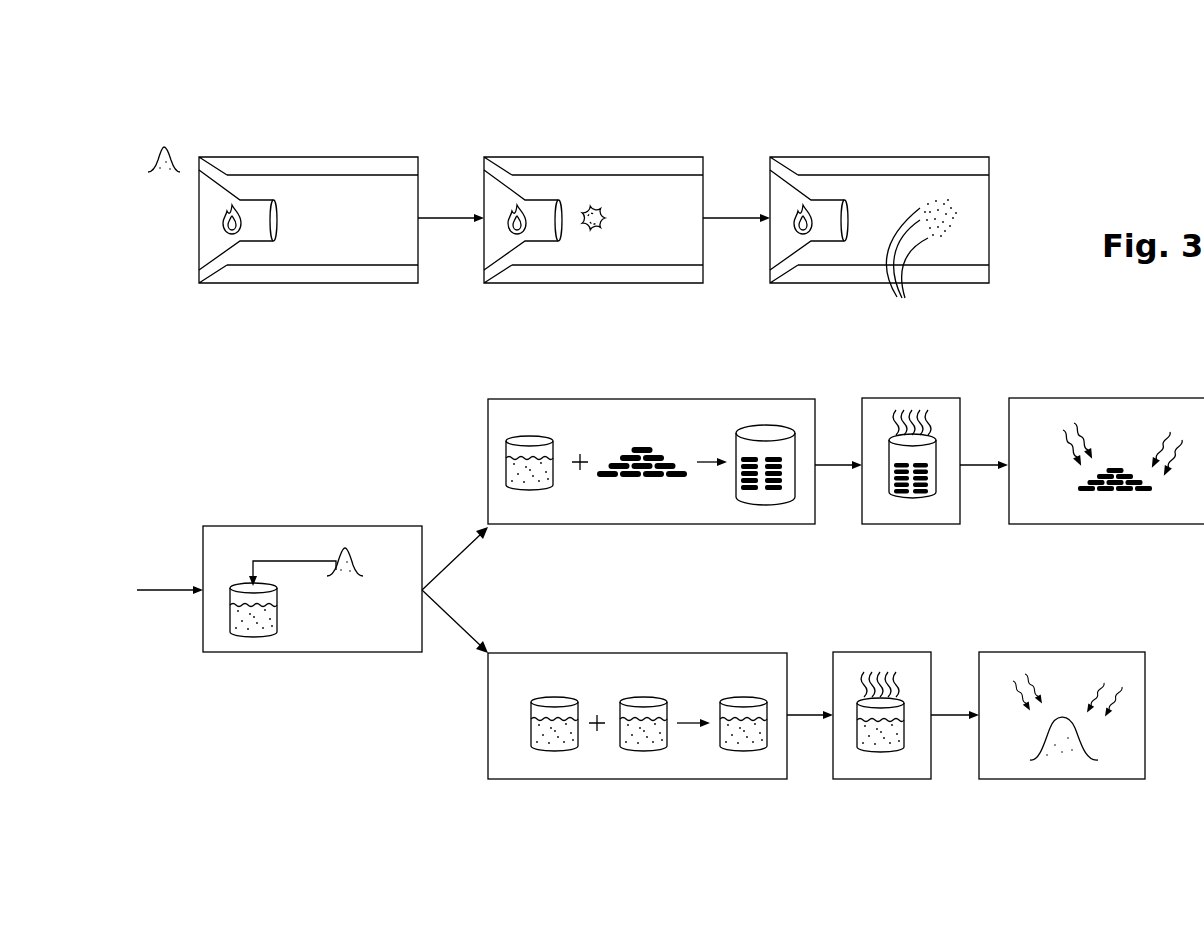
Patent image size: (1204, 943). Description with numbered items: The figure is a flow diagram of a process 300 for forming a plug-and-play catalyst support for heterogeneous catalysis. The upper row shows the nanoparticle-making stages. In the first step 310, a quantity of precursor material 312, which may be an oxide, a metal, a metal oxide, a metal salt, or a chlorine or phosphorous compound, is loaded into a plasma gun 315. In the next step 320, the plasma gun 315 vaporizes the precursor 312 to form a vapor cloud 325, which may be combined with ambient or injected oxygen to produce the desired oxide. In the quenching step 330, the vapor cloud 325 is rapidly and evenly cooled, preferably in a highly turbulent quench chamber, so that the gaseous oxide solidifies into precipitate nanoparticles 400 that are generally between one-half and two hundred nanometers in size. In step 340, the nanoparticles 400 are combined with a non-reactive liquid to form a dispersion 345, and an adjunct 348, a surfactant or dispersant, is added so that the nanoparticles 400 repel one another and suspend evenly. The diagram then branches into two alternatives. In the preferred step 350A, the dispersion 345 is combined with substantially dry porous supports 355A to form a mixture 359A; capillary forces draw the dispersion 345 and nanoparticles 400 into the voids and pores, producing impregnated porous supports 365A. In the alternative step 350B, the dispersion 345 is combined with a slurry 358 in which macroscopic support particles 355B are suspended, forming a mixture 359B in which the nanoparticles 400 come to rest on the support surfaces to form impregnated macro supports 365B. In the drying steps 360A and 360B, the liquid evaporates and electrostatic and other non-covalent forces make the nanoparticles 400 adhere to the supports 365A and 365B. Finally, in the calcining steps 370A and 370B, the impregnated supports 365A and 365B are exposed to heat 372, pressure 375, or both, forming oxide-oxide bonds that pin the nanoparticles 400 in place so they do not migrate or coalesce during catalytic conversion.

The process 300 is at (1060, 105).
The loading step 310 is at (388, 157).
The precursor material 312 is at (210, 204).
The plasma gun 315 is at (253, 198).
The vaporizing step 320 is at (673, 157).
The vapor cloud 325 is at (605, 230).
The quenching step 330 is at (958, 157).
The dispersion forming step 340 is at (392, 526).
The dispersion 345 is at (277, 612).
The adjunct 348 is at (343, 548).
The porous support impregnation step 350A is at (679, 399).
The macroscopic support impregnation step 350B is at (678, 652).
The porous supports 355A is at (642, 440).
The macroscopic support particles 355B is at (646, 741).
The slurry 358 is at (643, 692).
The mixture 359A is at (760, 498).
The mixture 359B is at (742, 750).
The drying step 360A is at (912, 525).
The drying step 360B is at (880, 780).
The impregnated porous supports 365A is at (792, 475).
The impregnated macro supports 365B is at (767, 733).
The calcining step 370A is at (1115, 525).
The calcining step 370B is at (1062, 780).
The heat 372 is at (1041, 561).
The pressure 375 is at (1144, 564).
The nanoparticles 400 is at (918, 262).